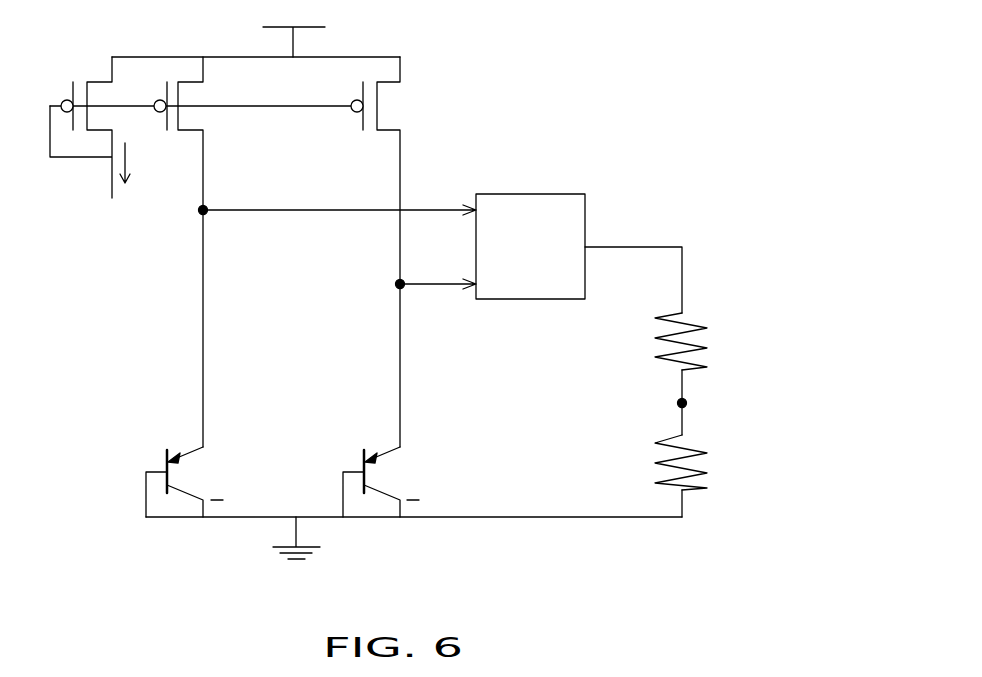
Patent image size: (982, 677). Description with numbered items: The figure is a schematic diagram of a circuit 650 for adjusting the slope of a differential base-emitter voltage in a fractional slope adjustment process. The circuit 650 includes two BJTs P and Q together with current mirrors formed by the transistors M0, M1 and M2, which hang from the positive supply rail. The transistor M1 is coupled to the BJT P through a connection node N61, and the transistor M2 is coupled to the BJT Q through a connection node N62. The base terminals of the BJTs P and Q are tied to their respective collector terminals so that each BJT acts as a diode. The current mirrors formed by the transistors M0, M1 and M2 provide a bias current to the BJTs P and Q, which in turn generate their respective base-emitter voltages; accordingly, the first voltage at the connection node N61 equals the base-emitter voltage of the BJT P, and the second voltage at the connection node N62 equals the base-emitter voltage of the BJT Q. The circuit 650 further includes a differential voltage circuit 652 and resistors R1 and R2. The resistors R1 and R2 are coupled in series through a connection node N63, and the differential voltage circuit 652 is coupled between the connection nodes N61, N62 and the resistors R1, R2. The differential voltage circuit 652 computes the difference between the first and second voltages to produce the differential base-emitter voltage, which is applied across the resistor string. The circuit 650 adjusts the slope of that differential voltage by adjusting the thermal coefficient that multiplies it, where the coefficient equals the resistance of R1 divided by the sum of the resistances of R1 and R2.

The circuit 650 is at (777, 583).
The differential voltage circuit 652 is at (530, 195).
The transistor M0 is at (74, 127).
The transistor M1 is at (198, 252).
The transistor M2 is at (390, 252).
The connection node N61 is at (179, 222).
The connection node N62 is at (376, 297).
The connection node N63 is at (657, 406).
The resistor R1 is at (662, 341).
The resistor R2 is at (662, 462).
The BJT P is at (173, 476).
The BJT Q is at (367, 476).